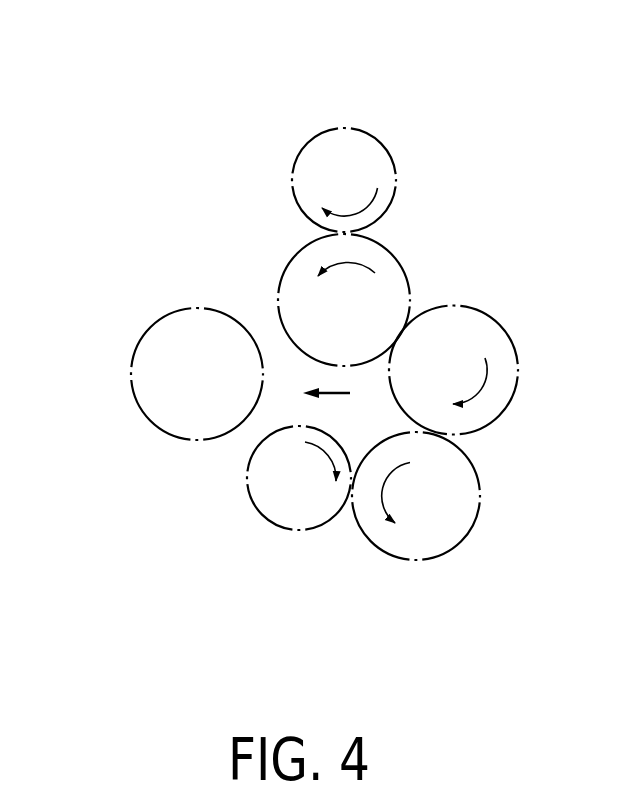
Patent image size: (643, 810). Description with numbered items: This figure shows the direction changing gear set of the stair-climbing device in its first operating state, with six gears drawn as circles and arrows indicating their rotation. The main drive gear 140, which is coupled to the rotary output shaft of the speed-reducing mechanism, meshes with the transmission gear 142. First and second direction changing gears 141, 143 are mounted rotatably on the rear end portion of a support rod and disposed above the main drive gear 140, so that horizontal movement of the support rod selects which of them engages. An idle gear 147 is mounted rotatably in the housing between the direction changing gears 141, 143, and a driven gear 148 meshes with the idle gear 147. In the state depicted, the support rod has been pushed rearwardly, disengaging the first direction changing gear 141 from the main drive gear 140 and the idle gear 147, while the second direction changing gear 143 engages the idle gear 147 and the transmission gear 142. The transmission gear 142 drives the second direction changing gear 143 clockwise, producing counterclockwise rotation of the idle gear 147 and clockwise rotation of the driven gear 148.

The main drive gear 140 is at (262, 513).
The first direction changing gear 141 is at (153, 424).
The transmission gear 142 is at (473, 527).
The second direction changing gear 143 is at (515, 345).
The idle gear 147 is at (403, 270).
The driven gear 148 is at (378, 138).